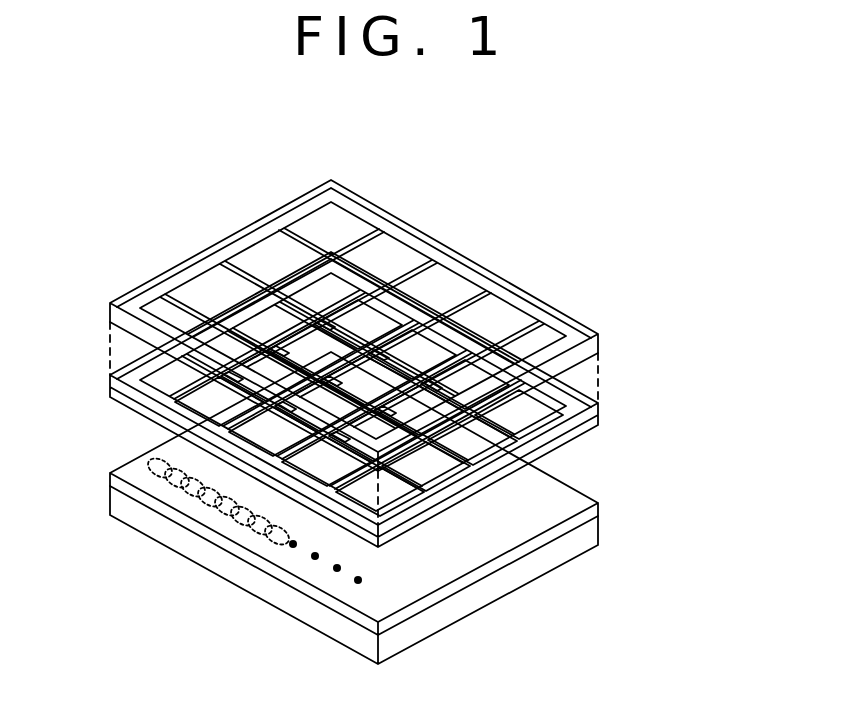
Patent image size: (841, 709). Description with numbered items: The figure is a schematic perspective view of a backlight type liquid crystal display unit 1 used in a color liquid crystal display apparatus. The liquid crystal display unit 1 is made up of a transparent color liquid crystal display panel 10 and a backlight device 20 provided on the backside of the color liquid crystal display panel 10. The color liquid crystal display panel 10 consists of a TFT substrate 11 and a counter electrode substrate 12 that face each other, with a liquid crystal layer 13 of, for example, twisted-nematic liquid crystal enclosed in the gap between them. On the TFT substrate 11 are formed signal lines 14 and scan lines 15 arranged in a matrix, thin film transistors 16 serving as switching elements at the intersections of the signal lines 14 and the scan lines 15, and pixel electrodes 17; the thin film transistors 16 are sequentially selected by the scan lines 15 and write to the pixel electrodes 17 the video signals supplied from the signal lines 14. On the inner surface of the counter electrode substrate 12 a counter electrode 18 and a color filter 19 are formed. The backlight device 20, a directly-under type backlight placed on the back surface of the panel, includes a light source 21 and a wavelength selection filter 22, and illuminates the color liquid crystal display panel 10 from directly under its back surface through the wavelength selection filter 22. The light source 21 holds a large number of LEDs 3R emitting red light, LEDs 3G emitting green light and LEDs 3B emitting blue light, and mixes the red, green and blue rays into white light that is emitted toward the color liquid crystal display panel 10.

The liquid crystal display unit 1 is at (477, 177).
The color liquid crystal display panel 10 is at (676, 320).
The TFT substrate 11 is at (600, 413).
The counter electrode substrate 12 is at (600, 339).
The liquid crystal layer 13 is at (600, 375).
The signal lines 14 is at (413, 470).
The scan lines 15 is at (348, 477).
The thin film transistors 16 is at (172, 353).
The pixel electrodes 17 is at (152, 381).
The counter electrode 18 is at (246, 276).
The color filter 19 is at (386, 242).
The backlight device 20 is at (676, 488).
The light source 21 is at (600, 536).
The wavelength selection filter 22 is at (600, 504).
The LEDs for emitting red light 3R is at (143, 485).
The LEDs for emitting green light 3G is at (172, 495).
The LEDs for emitting blue light 3B is at (197, 508).